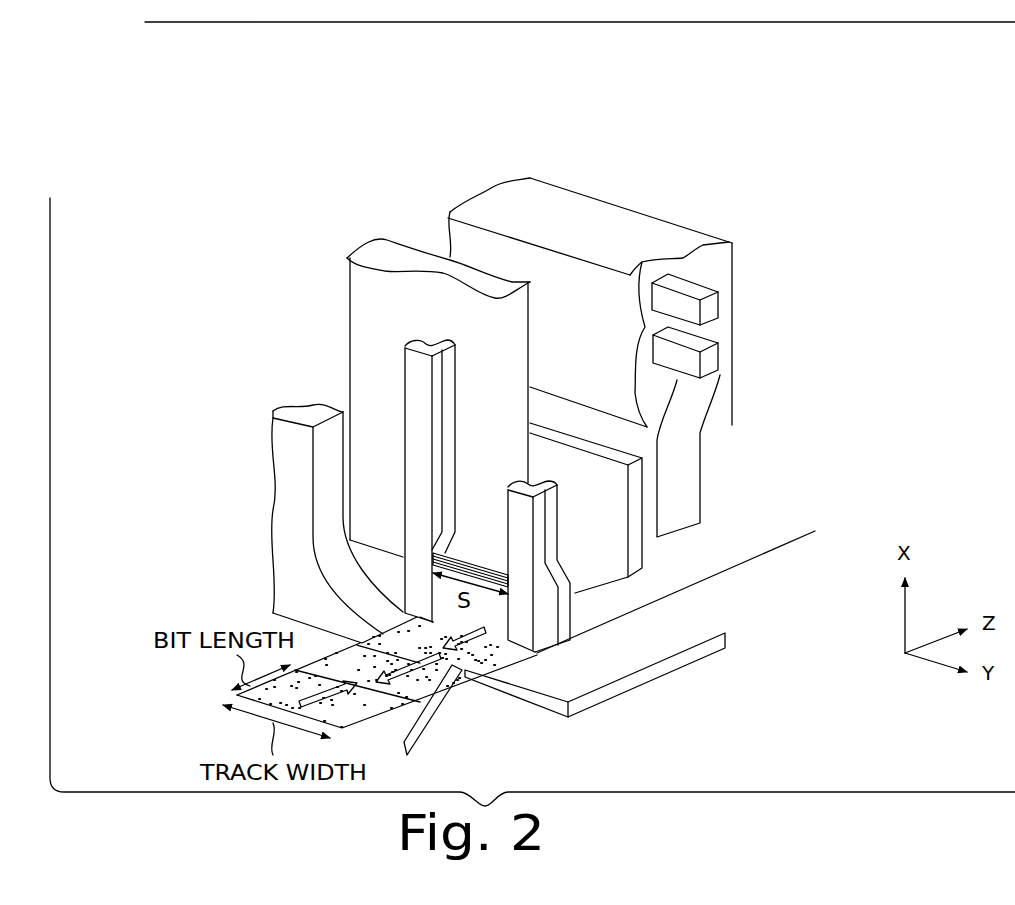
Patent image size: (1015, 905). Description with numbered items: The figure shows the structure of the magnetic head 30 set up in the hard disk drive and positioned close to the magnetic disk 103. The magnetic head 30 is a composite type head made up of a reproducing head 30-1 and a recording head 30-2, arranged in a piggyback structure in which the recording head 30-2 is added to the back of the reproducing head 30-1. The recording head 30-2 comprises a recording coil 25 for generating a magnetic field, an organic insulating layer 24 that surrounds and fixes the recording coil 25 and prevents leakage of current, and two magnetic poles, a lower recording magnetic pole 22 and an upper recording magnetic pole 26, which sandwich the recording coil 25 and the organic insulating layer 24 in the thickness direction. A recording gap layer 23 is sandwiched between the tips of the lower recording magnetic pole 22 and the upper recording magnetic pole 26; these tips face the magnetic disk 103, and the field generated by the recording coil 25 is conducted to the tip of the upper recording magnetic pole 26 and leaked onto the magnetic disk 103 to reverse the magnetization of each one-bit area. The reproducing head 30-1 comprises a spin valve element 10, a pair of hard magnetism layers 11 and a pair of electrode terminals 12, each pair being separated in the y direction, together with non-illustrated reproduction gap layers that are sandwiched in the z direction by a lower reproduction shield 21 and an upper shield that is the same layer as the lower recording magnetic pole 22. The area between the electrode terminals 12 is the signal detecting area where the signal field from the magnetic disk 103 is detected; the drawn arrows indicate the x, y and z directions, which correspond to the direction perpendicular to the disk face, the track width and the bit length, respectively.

The spin valve element 10 is at (477, 562).
The hard magnetism layers 11 is at (417, 507).
The electrode terminals 12 is at (447, 405).
The lower reproduction shield 21 is at (302, 417).
The lower recording magnetic pole 22 is at (376, 259).
The recording gap layer 23 is at (636, 565).
The organic insulating layer 24 is at (472, 210).
The recording coil 25 is at (720, 357).
The upper recording magnetic pole 26 is at (560, 203).
The magnetic head 30 is at (656, 189).
The reproducing head 30-1 is at (333, 177).
The recording head 30-2 is at (497, 105).
The magnetic disk 103 is at (663, 672).